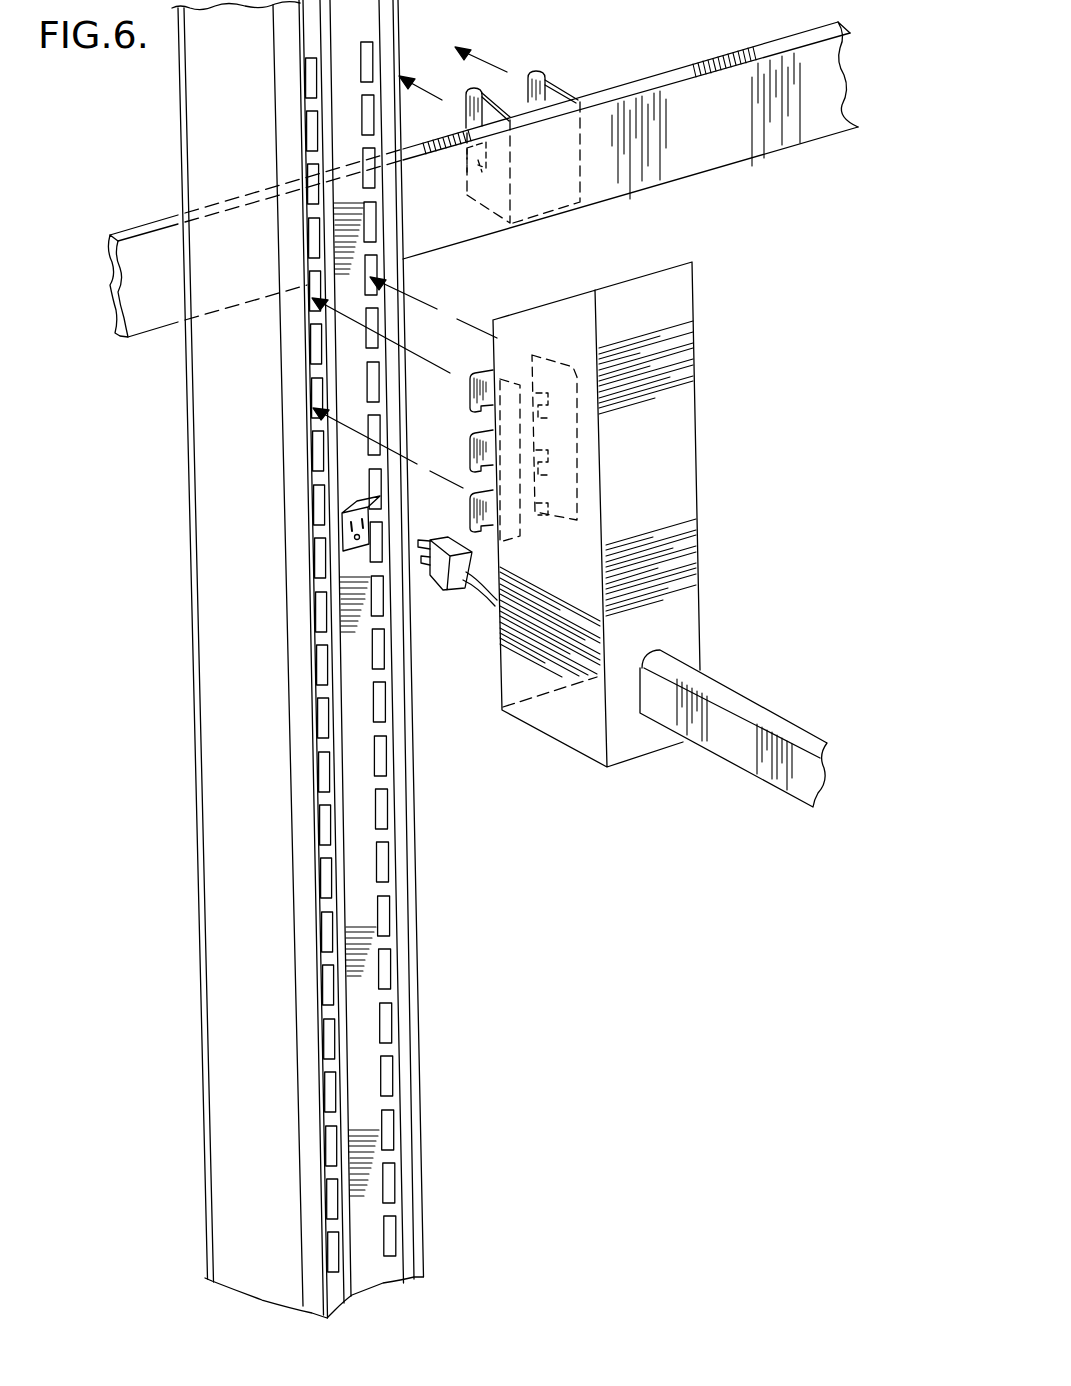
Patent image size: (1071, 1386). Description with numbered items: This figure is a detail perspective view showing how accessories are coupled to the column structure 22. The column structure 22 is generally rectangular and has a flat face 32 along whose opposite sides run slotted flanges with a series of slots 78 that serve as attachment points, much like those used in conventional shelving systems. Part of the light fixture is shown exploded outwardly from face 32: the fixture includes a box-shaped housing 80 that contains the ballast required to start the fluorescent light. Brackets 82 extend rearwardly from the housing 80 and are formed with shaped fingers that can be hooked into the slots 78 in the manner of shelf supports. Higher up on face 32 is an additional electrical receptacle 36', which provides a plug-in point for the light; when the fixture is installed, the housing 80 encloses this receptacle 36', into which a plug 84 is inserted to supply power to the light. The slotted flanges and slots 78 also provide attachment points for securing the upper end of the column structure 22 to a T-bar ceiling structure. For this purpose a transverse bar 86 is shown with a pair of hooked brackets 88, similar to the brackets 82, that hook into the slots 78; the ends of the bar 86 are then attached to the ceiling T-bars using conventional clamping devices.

The column structure 22 is at (190, 917).
The flat face of column 32 is at (358, 675).
The slots 78 is at (368, 340).
The receptacle 36' is at (311, 537).
The box-shaped housing 80 is at (686, 432).
The brackets 82 is at (540, 352).
The plug 84 is at (437, 588).
The transverse bar 86 is at (683, 90).
The hooked brackets 88 is at (547, 84).